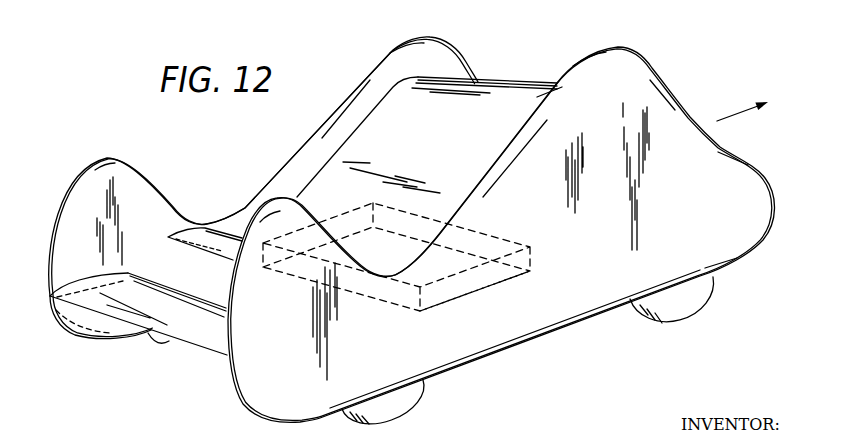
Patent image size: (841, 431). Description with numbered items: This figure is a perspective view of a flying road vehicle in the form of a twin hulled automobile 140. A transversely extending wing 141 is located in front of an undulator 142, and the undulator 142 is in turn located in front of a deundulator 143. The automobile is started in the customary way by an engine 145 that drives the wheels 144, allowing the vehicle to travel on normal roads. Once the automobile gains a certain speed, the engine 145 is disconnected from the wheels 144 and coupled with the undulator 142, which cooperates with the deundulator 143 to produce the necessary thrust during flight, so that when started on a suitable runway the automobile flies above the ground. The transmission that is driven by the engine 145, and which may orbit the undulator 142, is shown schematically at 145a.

The twin hulled automobile 140 is at (549, 43).
The transversely extending wing 141 is at (495, 97).
The undulator 142 is at (207, 240).
The deundulator 143 is at (180, 335).
The wheels 144 is at (404, 404).
The engine 145 is at (532, 267).
The transmission 145a is at (450, 297).